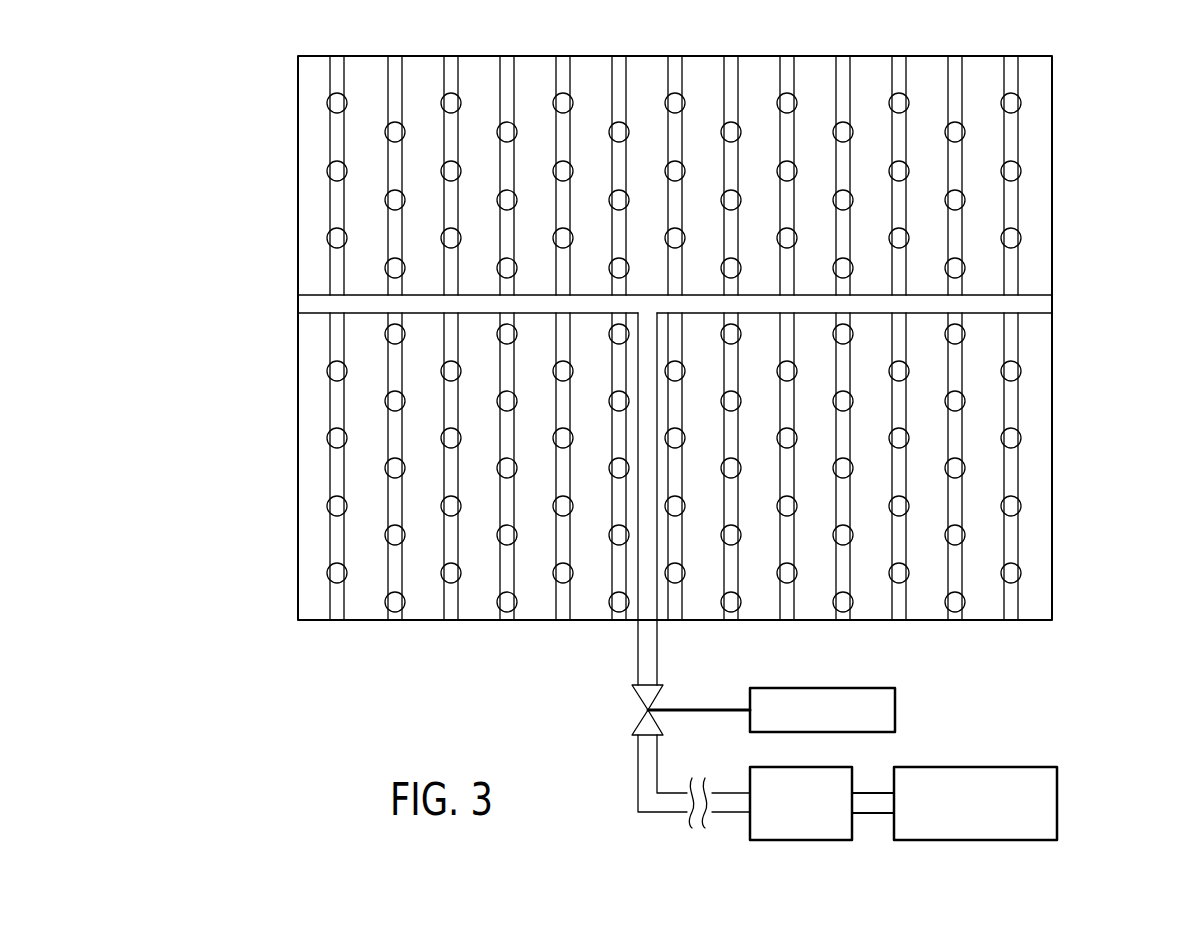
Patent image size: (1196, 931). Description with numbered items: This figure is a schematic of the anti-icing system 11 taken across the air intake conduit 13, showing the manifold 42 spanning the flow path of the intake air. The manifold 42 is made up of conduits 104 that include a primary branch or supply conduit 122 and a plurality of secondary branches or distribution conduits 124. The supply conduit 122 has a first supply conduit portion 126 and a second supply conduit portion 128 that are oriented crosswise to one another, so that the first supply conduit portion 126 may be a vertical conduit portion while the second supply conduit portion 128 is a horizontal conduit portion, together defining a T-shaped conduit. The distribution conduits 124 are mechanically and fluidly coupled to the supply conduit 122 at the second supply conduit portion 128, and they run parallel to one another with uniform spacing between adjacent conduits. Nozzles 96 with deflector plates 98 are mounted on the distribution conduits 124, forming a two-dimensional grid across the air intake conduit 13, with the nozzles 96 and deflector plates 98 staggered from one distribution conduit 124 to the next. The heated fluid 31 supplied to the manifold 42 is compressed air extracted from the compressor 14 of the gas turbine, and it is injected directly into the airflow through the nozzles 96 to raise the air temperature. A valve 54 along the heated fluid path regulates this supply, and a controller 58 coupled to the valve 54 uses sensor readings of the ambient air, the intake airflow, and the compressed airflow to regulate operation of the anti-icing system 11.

The anti-icing system 11 is at (701, 347).
The air intake conduit 13 is at (317, 56).
The manifold 42 is at (286, 338).
The first supply conduit portion 126 is at (338, 337).
The second supply conduit portion 128 is at (320, 303).
The conduits 104 is at (781, 364).
The distribution conduits 124 is at (919, 364).
The nozzles 96 is at (1087, 338).
The deflector plates 98 is at (1022, 103).
The supply conduit 122 is at (638, 574).
The valve 54 is at (637, 698).
The controller 58 is at (897, 710).
The heated fluid 31 is at (800, 767).
The compressor 14 is at (968, 767).